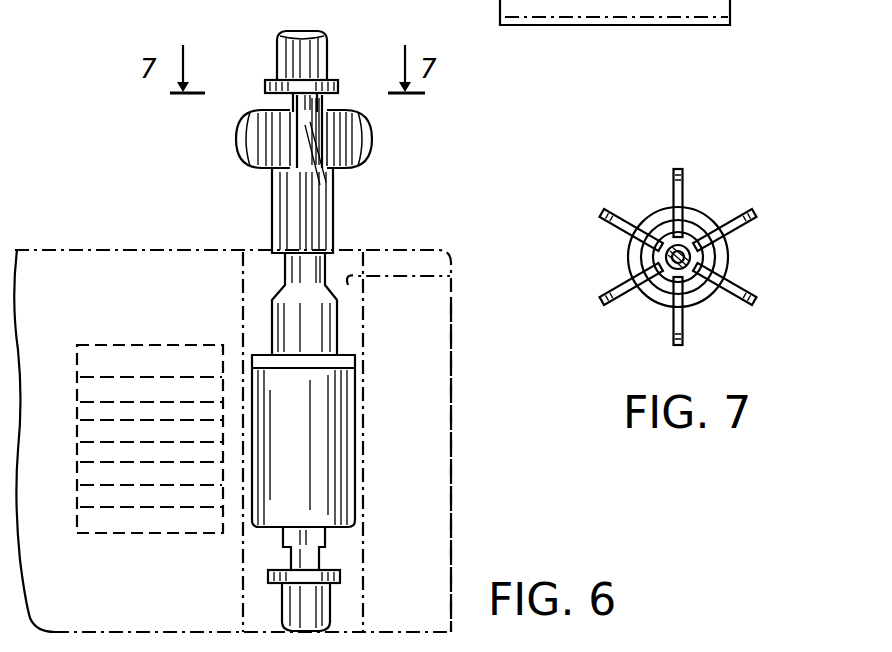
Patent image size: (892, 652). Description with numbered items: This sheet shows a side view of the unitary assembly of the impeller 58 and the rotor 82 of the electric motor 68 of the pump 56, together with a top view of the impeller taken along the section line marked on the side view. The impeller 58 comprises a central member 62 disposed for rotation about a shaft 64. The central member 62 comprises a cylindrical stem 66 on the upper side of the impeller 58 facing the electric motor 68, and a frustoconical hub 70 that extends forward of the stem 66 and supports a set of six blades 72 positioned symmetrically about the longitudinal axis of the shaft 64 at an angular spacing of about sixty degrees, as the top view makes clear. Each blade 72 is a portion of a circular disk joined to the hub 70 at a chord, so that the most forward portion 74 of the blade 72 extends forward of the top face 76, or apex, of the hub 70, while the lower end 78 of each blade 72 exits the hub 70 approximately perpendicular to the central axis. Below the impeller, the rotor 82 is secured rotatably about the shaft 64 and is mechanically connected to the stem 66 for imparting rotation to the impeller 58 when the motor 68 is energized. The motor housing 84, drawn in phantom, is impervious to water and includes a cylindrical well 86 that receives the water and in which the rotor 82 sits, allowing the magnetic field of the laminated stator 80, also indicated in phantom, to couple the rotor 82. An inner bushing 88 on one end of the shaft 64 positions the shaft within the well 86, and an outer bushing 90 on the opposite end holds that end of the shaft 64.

In FIG. 6, the pump 56 is at (452, 190).
In FIG. 6, the impeller 58 is at (185, 148).
In FIG. 7, the impeller 58 is at (775, 320).
In FIG. 6, the central member 62 is at (245, 188).
In FIG. 6, the shaft 64 is at (303, 102).
In FIG. 7, the shaft 64 is at (650, 258).
In FIG. 6, the cylindrical stem 66 is at (275, 217).
In FIG. 7, the cylindrical stem 66 is at (698, 223).
In FIG. 6, the electric motor 68 is at (462, 342).
In FIG. 6, the frustoconical hub 70 is at (320, 178).
In FIG. 7, the frustoconical hub 70 is at (655, 286).
In FIG. 6, the blades 72 is at (350, 152).
In FIG. 7, the blades 72 is at (748, 216).
In FIG. 6, the forward portion of the blade 74 is at (268, 113).
In FIG. 6, the top face of the hub 76 is at (247, 140).
In FIG. 7, the top face of the hub 76 is at (716, 254).
In FIG. 6, the lower end of blade 78 is at (362, 170).
In FIG. 6, the laminated stator 80 is at (138, 345).
In FIG. 6, the rotor 82 is at (352, 427).
In FIG. 7, the rotor 82 is at (728, 262).
In FIG. 6, the motor housing 84 is at (452, 370).
In FIG. 6, the cylindrical well 86 is at (452, 277).
In FIG. 6, the inner bushing 88 is at (332, 612).
In FIG. 6, the outer bushing 90 is at (276, 57).